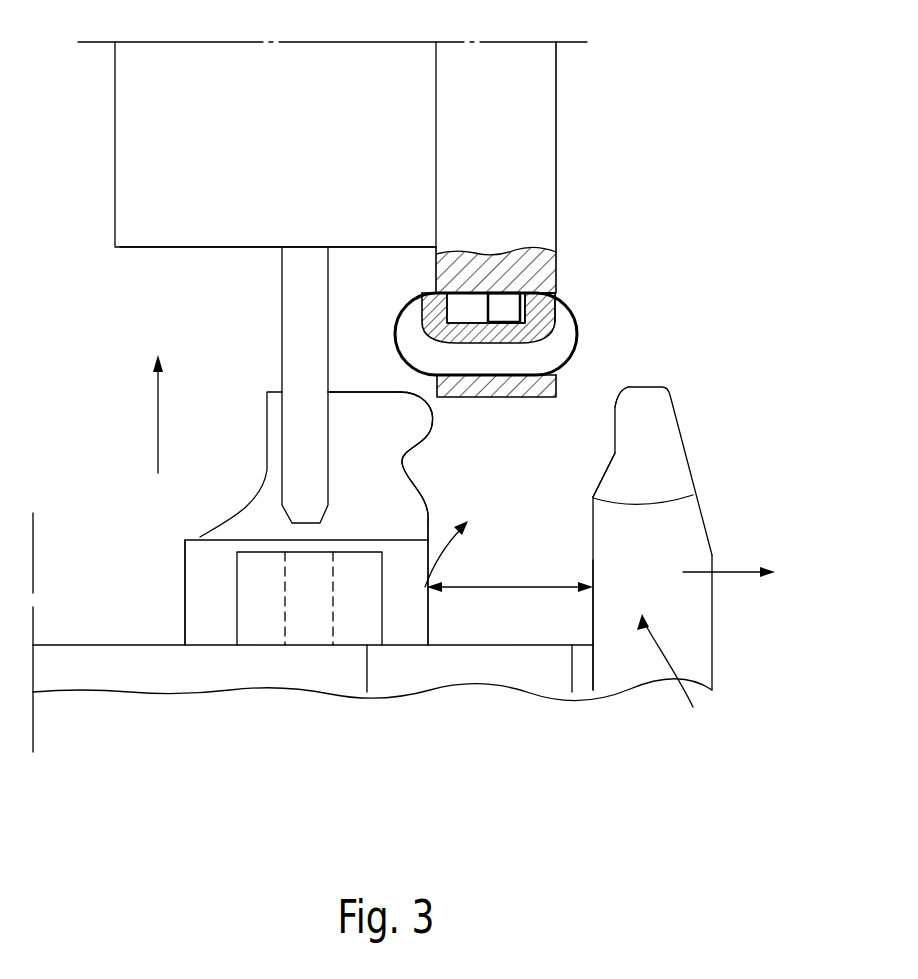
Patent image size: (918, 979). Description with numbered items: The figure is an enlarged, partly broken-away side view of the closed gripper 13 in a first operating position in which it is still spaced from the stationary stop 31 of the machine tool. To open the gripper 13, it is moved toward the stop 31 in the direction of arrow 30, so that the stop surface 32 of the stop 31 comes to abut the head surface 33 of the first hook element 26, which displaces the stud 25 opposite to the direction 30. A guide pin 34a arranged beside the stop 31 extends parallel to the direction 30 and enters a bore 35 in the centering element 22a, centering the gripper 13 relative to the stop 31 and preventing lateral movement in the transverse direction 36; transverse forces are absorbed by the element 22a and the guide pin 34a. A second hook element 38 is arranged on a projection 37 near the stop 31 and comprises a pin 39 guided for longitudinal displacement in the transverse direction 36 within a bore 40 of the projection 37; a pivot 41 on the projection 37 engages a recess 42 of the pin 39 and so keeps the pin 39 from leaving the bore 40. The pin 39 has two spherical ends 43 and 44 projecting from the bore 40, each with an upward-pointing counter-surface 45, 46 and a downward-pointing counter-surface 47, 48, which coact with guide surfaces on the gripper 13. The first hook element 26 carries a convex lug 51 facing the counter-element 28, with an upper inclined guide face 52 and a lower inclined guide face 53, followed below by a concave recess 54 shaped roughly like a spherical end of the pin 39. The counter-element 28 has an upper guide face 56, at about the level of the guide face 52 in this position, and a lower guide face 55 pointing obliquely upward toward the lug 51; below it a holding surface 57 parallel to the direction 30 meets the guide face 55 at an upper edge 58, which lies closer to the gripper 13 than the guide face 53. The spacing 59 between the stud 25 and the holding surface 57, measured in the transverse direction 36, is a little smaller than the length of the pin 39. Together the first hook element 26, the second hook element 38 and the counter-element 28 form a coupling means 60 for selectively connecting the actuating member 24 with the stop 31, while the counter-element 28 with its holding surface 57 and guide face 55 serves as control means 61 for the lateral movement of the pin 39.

The gripper 13 is at (76, 674).
The centering element 22a is at (262, 627).
The actuating member 24 is at (210, 630).
The stud 25 is at (193, 605).
The first hook element 26 is at (245, 520).
The counter-element 28 is at (678, 616).
The direction arrow 30 is at (158, 437).
The stationary stop 31 is at (160, 107).
The stop surface 32 is at (167, 247).
The head surface 33 is at (358, 386).
The guide pin 34a is at (300, 363).
The bore 35 is at (313, 622).
The transverse direction 36 is at (728, 566).
The projection 37 is at (513, 173).
The second hook element 38 is at (525, 227).
The pin 39 is at (577, 325).
The bore 40 is at (573, 293).
The pivot 41 is at (565, 313).
The recess 42 is at (470, 310).
The spherical end 43 is at (552, 337).
The spherical end 44 is at (395, 331).
The counter-surface 45 is at (512, 304).
The counter-surface 46 is at (403, 313).
The counter-surface 47 is at (577, 355).
The counter-surface 48 is at (395, 350).
The lug 51 is at (403, 427).
The upper inclined guide face 52 is at (420, 400).
The lower inclined guide face 53 is at (413, 447).
The concave recess 54 is at (413, 485).
The lower guide face 55 is at (608, 468).
The upper guide face 56 is at (613, 398).
The holding surface 57 is at (593, 600).
The upper edge 58 is at (693, 497).
The spacing 59 is at (505, 585).
The coupling means 60 is at (425, 587).
The control means 61 is at (693, 707).